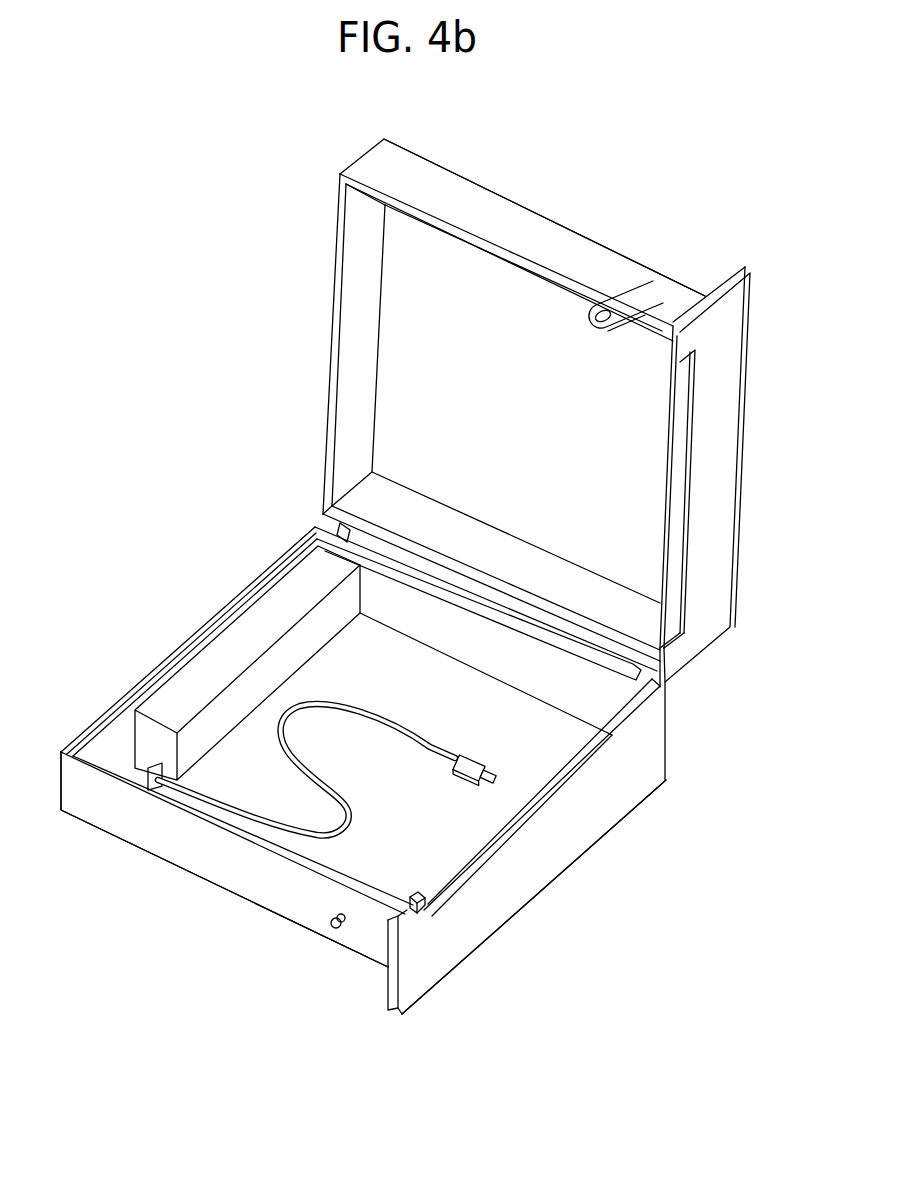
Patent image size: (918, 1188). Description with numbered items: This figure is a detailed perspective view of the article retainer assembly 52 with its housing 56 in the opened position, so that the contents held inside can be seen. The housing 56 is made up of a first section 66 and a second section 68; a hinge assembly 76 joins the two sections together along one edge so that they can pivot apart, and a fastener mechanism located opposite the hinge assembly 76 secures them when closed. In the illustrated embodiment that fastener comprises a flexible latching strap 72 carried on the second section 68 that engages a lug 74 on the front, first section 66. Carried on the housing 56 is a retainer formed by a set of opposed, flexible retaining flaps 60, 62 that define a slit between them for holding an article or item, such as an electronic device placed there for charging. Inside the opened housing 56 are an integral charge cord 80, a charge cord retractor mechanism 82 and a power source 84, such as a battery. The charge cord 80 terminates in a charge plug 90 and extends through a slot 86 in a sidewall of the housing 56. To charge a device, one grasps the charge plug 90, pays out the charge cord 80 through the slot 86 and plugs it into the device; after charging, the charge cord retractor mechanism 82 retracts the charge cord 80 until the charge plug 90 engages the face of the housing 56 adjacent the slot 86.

The article retainer assembly 52 is at (175, 305).
The housing 56 is at (325, 468).
The retaining flap 60 is at (683, 537).
The retaining flap 62 is at (497, 835).
The first section 66 is at (197, 847).
The second section 68 is at (555, 235).
The flexible latching strap 72 is at (637, 296).
The lug 74 is at (333, 927).
The hinge assembly 76 is at (570, 640).
The charge cord 80 is at (350, 703).
The charge cord retractor mechanism 82 is at (120, 745).
The power source 84 is at (220, 652).
The slot 86 is at (415, 903).
The charge plug 90 is at (463, 777).